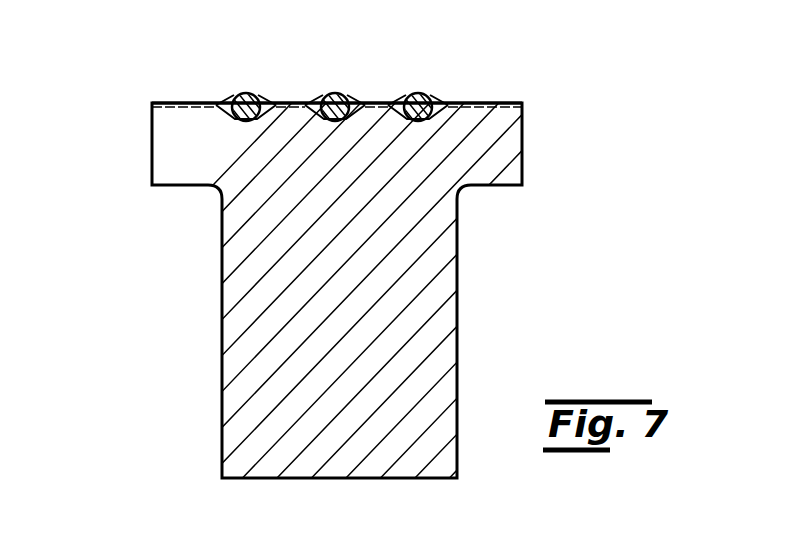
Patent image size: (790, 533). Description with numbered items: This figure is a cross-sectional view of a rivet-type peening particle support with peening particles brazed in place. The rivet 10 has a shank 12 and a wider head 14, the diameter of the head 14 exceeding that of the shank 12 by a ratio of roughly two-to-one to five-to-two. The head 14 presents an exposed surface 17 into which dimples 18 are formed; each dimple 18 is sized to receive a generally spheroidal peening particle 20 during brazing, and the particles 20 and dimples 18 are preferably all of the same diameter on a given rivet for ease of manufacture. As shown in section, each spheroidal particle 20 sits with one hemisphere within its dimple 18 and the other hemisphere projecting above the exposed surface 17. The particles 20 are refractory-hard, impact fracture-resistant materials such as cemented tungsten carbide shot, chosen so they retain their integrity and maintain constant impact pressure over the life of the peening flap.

The rivet 10 is at (140, 276).
The shank 12 is at (445, 302).
The head 14 is at (520, 127).
The top bearing surface 17 is at (468, 103).
The dimples 18 is at (233, 95).
The ball bearings / races 20 is at (403, 95).